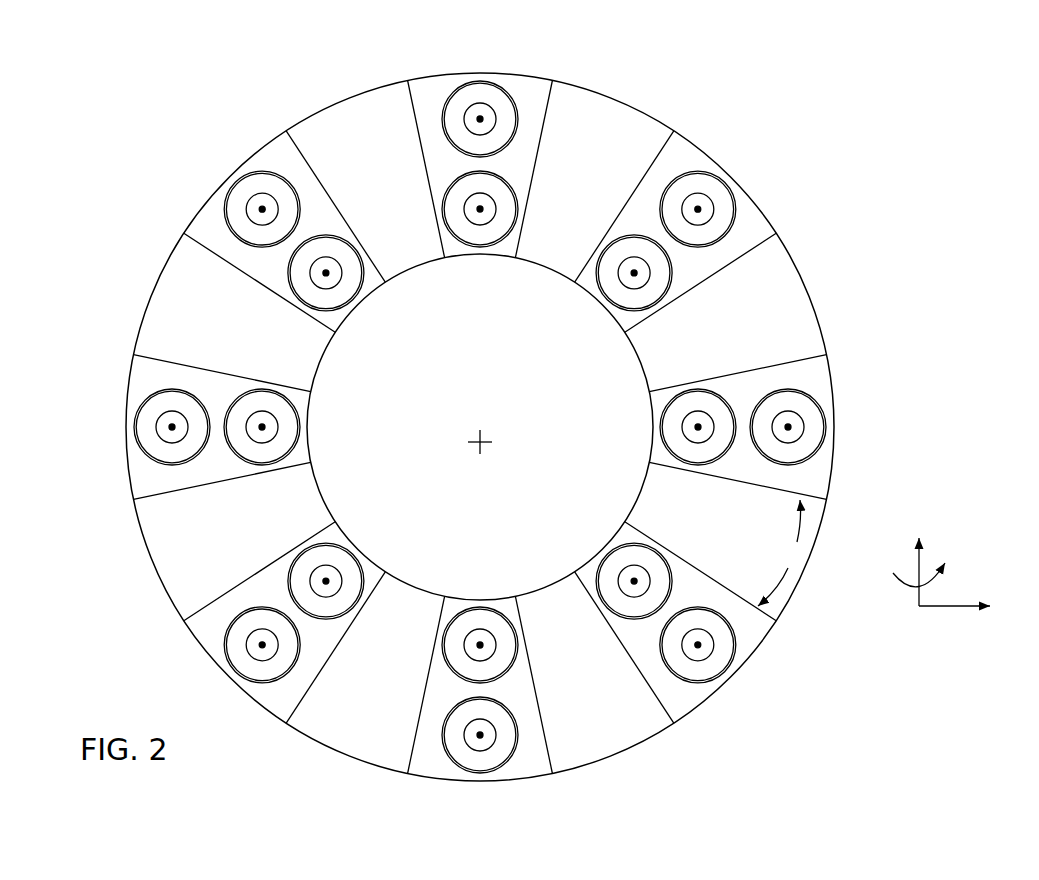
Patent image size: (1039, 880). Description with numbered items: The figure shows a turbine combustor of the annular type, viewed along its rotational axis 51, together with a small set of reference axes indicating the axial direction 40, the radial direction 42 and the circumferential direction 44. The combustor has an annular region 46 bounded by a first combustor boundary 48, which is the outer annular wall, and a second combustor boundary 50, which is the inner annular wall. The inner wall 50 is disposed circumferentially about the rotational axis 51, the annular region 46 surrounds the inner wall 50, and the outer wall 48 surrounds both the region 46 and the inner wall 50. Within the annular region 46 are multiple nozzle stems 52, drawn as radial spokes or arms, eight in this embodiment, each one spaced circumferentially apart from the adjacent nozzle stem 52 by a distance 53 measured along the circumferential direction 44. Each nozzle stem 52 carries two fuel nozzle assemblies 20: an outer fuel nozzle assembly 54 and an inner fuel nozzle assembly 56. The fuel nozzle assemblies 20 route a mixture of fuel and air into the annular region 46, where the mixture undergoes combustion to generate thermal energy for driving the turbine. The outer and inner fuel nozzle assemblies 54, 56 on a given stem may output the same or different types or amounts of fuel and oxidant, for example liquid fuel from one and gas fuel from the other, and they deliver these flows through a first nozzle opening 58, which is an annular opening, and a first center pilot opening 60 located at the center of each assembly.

The fuel nozzle assembly 20 is at (480, 427).
The axial axis or direction 40 is at (929, 589).
The radial axis or direction 42 is at (955, 606).
The circumferential axis or direction 44 is at (905, 580).
The annular region 46 is at (483, 427).
The first combustor boundary 48 is at (626, 103).
The second combustor boundary 50 is at (484, 256).
The rotational axis 51 is at (481, 442).
The nozzle stem 52 is at (427, 170).
The distance 53 is at (779, 553).
The outer fuel nozzle assembly 54 is at (252, 252).
The inner fuel nozzle assembly 56 is at (355, 247).
The first nozzle opening 58 is at (250, 187).
The first center pilot opening 60 is at (263, 212).